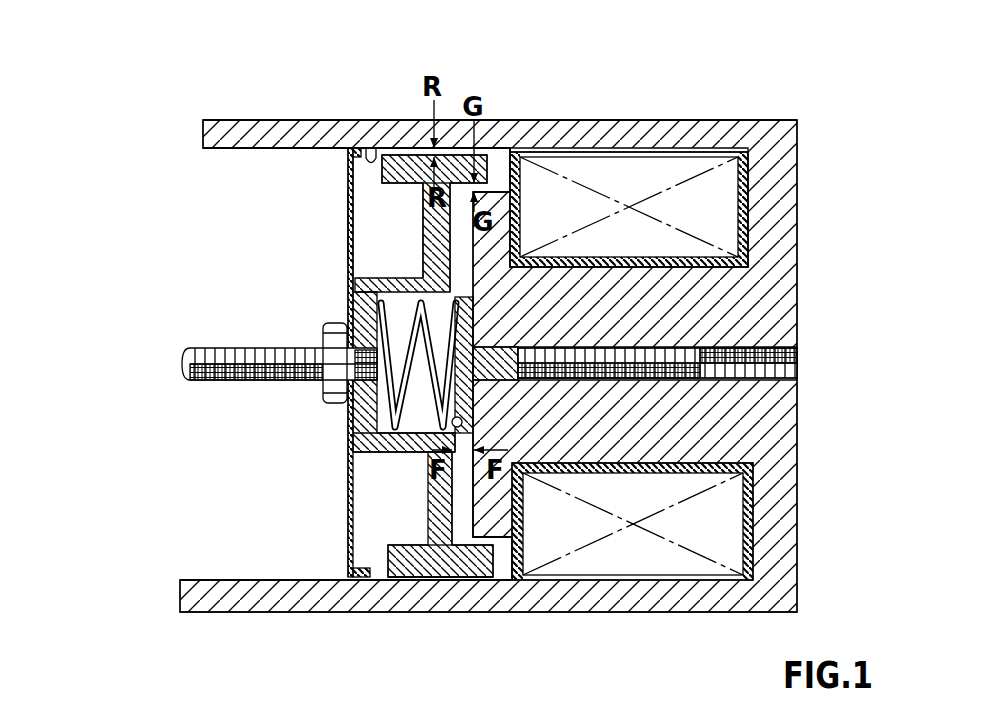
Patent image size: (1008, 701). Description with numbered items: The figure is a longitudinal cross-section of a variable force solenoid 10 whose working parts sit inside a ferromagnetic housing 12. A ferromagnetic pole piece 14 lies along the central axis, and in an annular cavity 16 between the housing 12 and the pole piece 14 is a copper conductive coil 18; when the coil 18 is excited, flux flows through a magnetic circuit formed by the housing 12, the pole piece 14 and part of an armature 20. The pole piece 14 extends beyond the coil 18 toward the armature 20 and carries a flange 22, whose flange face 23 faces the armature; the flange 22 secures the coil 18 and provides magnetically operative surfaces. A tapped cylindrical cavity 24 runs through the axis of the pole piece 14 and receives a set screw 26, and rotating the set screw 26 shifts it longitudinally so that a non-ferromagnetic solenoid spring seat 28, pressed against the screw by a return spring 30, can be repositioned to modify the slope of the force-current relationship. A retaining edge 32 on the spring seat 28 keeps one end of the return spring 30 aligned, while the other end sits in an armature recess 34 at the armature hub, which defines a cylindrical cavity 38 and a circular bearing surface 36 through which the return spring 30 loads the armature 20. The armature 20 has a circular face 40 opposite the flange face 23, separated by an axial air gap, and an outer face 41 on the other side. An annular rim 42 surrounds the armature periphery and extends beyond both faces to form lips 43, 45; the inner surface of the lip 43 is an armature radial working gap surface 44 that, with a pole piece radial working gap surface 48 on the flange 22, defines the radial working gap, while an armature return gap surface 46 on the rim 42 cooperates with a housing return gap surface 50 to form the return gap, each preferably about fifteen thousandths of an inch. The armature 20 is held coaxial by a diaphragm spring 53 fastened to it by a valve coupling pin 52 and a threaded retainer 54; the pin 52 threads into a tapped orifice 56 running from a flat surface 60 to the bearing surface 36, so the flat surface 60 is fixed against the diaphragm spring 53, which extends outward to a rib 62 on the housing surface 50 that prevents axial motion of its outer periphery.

The solenoid 10 is at (772, 97).
The housing 12 is at (637, 130).
The pole piece 14 is at (774, 300).
The annular cavity 16 is at (690, 268).
The conductive coil 18 is at (722, 200).
The armature 20 is at (346, 300).
The flange 22 is at (550, 560).
The flange face 23 is at (456, 525).
The cylindrical cavity 24 is at (770, 347).
The set screw 26 is at (690, 383).
The solenoid spring seat 28 is at (505, 382).
The return spring 30 is at (347, 480).
The retaining edge 32 is at (530, 256).
The armature recess 34 is at (418, 445).
The circular bearing surface 36 is at (346, 248).
The cylindrical cavity 38 is at (410, 278).
The circular face 40 is at (458, 215).
The outer face 41 is at (438, 547).
The rim 42 is at (447, 556).
The lip 43 is at (505, 508).
The armature radial working gap surface 44 is at (462, 295).
The lip 45 is at (401, 565).
The armature return gap surface 46 is at (402, 163).
The pole piece radial working gap surface 48 is at (500, 196).
The housing return gap surface 50 is at (368, 152).
The valve coupling pin 52 is at (235, 382).
The diaphragm spring 53 is at (346, 222).
The threaded retainer 54 is at (322, 330).
The tapped orifice 56 is at (346, 412).
The flat surface 60 is at (352, 445).
The rib 62 is at (357, 148).